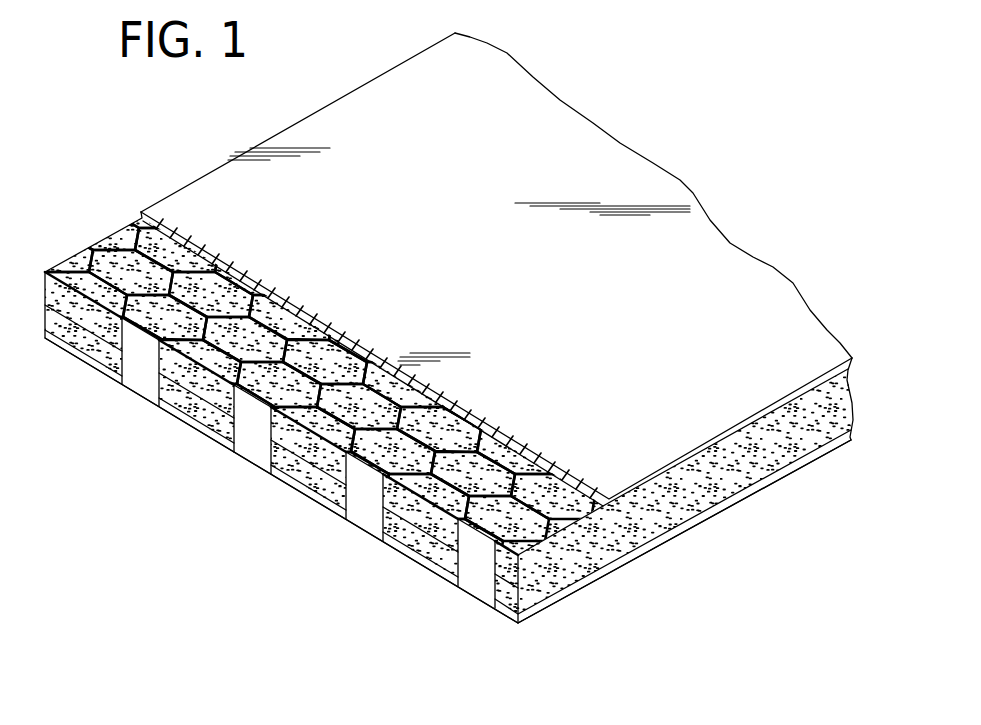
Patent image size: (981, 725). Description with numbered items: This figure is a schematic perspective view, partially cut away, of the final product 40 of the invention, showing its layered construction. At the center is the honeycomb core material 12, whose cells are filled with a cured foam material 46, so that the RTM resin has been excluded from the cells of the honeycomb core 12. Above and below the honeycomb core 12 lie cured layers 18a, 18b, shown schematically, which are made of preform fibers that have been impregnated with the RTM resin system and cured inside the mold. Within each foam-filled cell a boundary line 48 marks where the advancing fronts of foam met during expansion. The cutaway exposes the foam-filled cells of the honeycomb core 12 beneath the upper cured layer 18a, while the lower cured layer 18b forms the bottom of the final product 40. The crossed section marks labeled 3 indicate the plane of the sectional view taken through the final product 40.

The final product 40 is at (186, 148).
The cured layer 18a is at (480, 272).
The cured layer 18b is at (585, 578).
The cured foam material 46 is at (188, 405).
The boundary line 48 is at (308, 462).
The honeycomb core material 12 is at (475, 565).
The section line 3- 3 is at (697, 112).